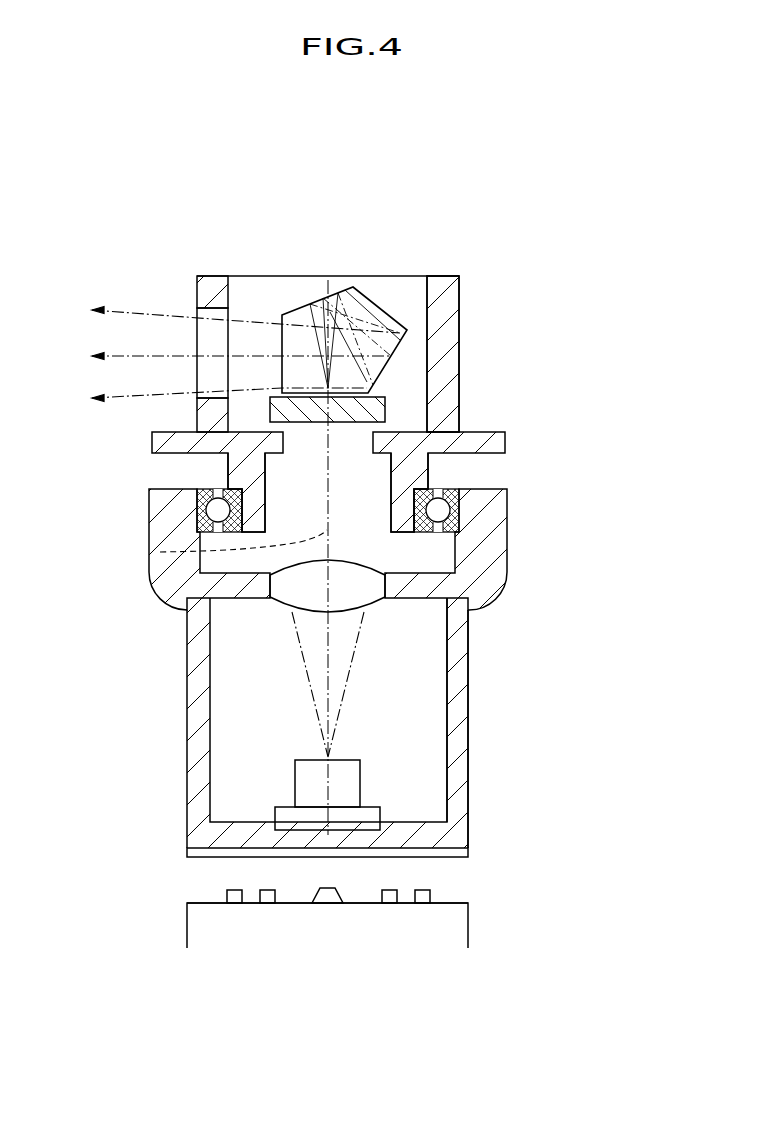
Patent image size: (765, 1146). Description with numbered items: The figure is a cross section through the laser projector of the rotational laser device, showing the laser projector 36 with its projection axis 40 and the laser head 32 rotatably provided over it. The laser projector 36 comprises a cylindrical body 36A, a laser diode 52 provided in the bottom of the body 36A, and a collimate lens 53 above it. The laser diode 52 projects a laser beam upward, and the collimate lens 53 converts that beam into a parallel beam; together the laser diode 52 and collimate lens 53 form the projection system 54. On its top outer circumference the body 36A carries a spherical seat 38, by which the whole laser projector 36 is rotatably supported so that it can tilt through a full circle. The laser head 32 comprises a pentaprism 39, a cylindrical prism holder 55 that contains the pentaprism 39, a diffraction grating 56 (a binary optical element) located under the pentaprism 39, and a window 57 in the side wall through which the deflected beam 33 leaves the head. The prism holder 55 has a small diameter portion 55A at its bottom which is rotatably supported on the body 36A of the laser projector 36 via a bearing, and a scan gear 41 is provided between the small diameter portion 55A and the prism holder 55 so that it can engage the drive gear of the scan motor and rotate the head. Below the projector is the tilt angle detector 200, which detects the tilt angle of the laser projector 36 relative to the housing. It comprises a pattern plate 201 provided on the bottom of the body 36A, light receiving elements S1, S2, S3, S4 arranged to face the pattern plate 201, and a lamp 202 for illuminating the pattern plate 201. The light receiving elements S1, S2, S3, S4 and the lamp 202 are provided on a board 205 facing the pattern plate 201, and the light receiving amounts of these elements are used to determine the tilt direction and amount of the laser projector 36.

The laser head 32 is at (467, 336).
The measurement light beams 33 is at (124, 304).
The window 57 is at (210, 342).
The pentaprism 39 is at (387, 312).
The prism holder 55 is at (460, 378).
The diffraction grating 56 is at (372, 416).
The scan gear 41 is at (492, 432).
The small diameter portion 55A is at (230, 471).
The spherical seat 38 is at (502, 593).
The projection axis 40 is at (160, 552).
The collimate lens 53 is at (370, 598).
The laser projector 36 is at (506, 689).
The cylindrical body 36A is at (468, 773).
The projection system 54 is at (278, 695).
The laser diode 52 is at (355, 790).
The pattern plate 201 is at (188, 857).
The tilt angle detector 200 is at (505, 882).
The board 205 is at (470, 928).
The light receiving element S1 is at (235, 903).
The light receiving element S2 is at (268, 903).
The light receiving element S3 is at (388, 903).
The light receiving element S4 is at (422, 903).
The lamp 202 is at (327, 897).